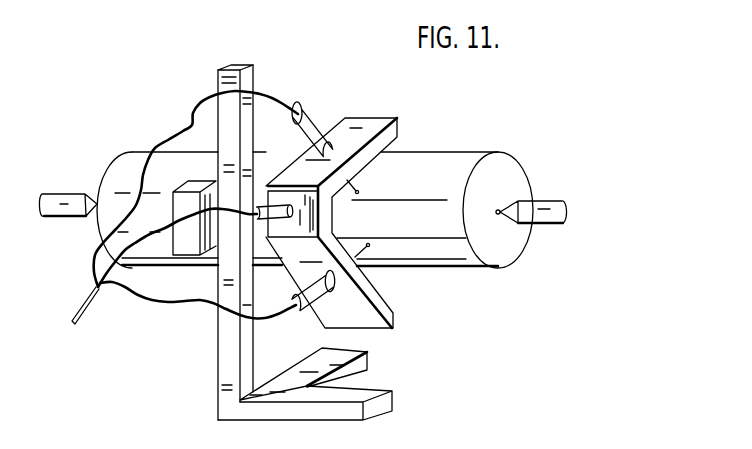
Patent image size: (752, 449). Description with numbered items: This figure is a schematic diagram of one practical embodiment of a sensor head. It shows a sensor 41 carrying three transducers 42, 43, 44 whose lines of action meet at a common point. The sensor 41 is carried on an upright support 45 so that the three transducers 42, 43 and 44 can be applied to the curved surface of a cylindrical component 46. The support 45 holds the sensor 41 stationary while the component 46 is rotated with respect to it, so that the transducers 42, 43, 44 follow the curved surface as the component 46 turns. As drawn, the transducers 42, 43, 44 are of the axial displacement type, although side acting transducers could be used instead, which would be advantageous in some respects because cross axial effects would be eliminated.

The sensor 41 is at (370, 127).
The transducer 42 is at (313, 128).
The transducer 43 is at (258, 219).
The transducer 44 is at (313, 293).
The upright support 45 is at (233, 118).
The cylindrical component 46 is at (442, 175).